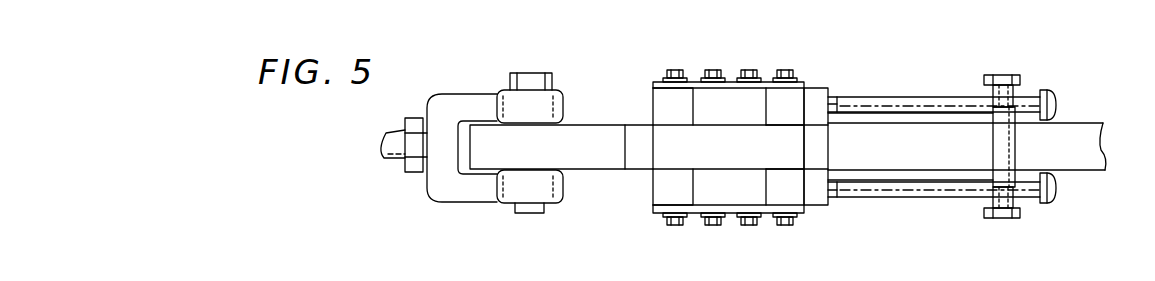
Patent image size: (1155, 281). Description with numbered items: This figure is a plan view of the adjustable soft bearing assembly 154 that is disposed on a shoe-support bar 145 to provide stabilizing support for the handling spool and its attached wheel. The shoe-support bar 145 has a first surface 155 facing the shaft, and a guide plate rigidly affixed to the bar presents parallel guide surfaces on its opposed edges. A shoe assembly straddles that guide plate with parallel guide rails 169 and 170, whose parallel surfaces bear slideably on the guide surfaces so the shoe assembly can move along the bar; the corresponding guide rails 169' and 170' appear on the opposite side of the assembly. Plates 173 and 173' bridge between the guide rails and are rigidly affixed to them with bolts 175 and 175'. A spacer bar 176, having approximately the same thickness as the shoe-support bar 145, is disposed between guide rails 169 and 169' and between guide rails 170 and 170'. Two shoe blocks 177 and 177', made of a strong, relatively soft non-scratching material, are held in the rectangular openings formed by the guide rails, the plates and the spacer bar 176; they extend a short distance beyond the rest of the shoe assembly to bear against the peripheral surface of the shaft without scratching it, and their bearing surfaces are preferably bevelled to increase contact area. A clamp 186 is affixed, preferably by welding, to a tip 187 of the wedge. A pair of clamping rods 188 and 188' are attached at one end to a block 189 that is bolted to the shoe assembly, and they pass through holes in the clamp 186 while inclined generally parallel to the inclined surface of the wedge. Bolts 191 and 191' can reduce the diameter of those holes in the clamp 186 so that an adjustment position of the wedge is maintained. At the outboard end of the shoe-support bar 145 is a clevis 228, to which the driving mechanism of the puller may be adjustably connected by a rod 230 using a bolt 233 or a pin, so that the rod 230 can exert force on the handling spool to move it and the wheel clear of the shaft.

The shoe-support bar 145 is at (1087, 123).
The adjustable soft bearing assembly 154 is at (636, 211).
The first surface 155 is at (578, 135).
The guide rail 169 is at (641, 187).
The guide rail 169' is at (646, 106).
The guide rail 170 is at (786, 215).
The guide rail 170' is at (806, 81).
The plate 173 is at (728, 234).
The plate 173' is at (728, 53).
The bolt 175 is at (708, 238).
The bolt 175' is at (730, 56).
The spacer bar 176 is at (790, 150).
The shoe block 177 is at (743, 216).
The shoe block 177' is at (757, 81).
The clamp 186 is at (1017, 145).
The tip 187 is at (990, 148).
The clamping rod 188 is at (942, 205).
The clamping rod 188' is at (942, 87).
The block 189 is at (817, 163).
The bolt 191 is at (1013, 221).
The bolt 191' is at (1025, 69).
The clevis 228 is at (552, 210).
The rod 230 is at (443, 203).
The bolt 233 is at (523, 214).